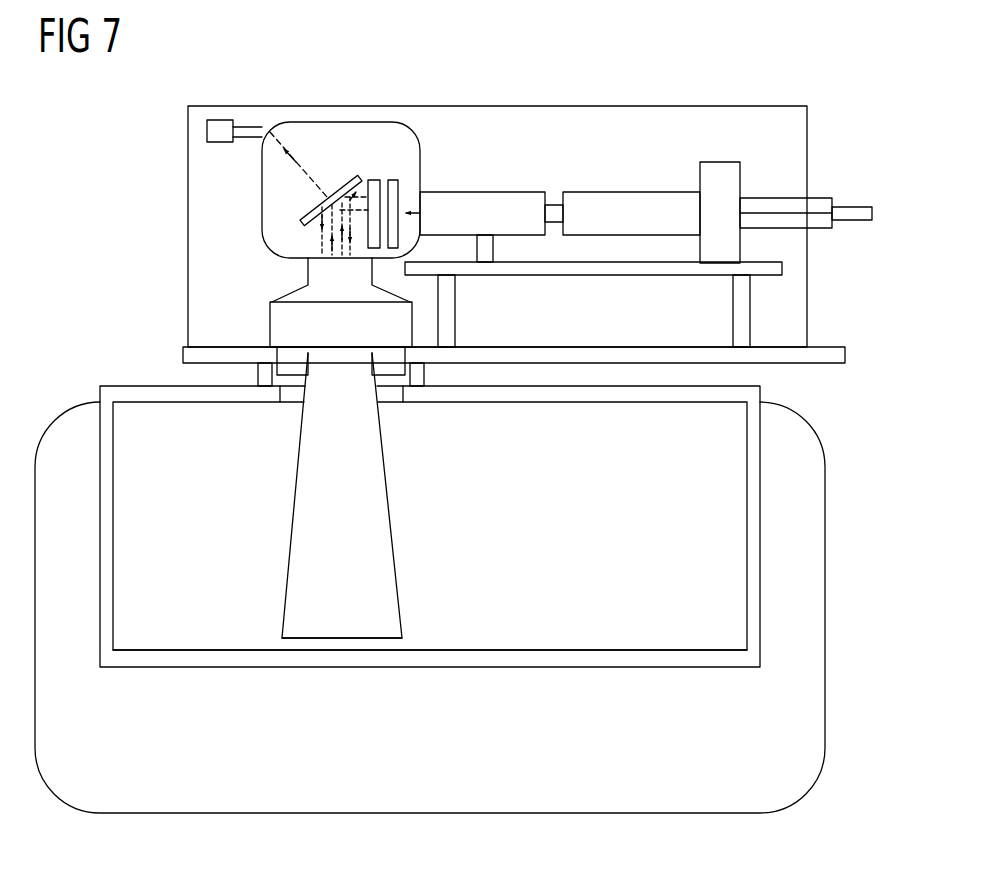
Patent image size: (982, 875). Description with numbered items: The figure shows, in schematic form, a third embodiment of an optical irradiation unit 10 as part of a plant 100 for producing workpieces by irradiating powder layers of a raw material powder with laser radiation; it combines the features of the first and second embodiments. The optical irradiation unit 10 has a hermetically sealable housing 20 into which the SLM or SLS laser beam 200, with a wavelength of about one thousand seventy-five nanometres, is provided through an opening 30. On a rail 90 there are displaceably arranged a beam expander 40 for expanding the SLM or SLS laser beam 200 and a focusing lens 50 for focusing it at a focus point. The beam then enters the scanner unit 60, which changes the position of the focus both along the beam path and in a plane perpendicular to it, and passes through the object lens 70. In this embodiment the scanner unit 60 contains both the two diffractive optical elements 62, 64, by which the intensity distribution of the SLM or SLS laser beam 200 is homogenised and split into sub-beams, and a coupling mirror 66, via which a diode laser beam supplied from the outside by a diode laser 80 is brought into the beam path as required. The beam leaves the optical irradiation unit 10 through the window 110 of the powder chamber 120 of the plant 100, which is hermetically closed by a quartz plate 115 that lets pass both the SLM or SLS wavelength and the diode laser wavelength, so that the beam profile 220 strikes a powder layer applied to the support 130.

The optical irradiation unit 10 is at (780, 96).
The housing 20 is at (810, 128).
The opening 30 is at (810, 190).
The beam expander 40 is at (622, 200).
The focusing lens 50 is at (483, 197).
The scanner unit 60 is at (262, 190).
The first diffractive optical element 62 is at (395, 178).
The second diffractive optical element 64 is at (373, 178).
The coupling mirror 66 is at (317, 207).
The object lens 70 is at (280, 323).
The diode laser 80 is at (222, 120).
The rail 90 is at (595, 275).
The plant 100 is at (825, 435).
The window 110 is at (389, 410).
The quartz plate 115 is at (380, 382).
The powder chamber 120 is at (722, 540).
The support 130 is at (457, 653).
The SLM or SLS laser beam 200 is at (765, 208).
The beam profile 220 is at (340, 642).